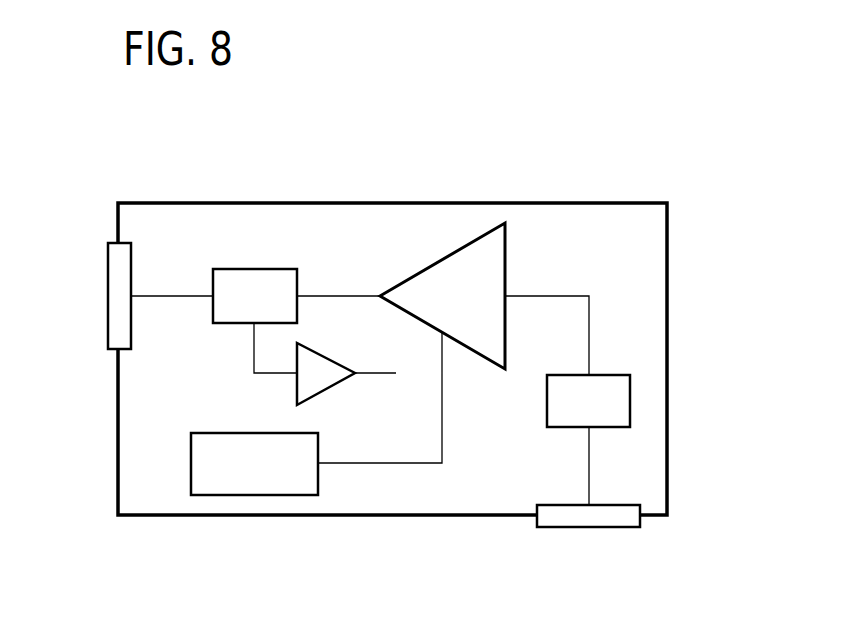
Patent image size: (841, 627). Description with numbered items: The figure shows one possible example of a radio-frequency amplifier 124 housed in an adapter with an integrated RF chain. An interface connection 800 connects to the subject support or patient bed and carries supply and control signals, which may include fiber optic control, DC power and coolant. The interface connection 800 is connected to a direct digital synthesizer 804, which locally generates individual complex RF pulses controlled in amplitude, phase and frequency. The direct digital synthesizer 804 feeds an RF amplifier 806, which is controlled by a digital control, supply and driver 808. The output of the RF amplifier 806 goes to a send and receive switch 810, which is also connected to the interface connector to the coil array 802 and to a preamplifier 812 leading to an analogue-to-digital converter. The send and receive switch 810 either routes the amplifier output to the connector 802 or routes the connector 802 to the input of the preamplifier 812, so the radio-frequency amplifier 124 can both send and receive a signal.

The radio-frequency amplifier 124 is at (427, 200).
The interface connection 800 is at (608, 527).
The interface connector to the coil array 802 is at (108, 280).
The direct digital synthesizer 804 is at (630, 405).
The RF amplifier 806 is at (505, 257).
The digital control, supply and driver 808 is at (237, 432).
The send and receive switch 810 is at (282, 269).
The preamplifier 812 is at (331, 396).